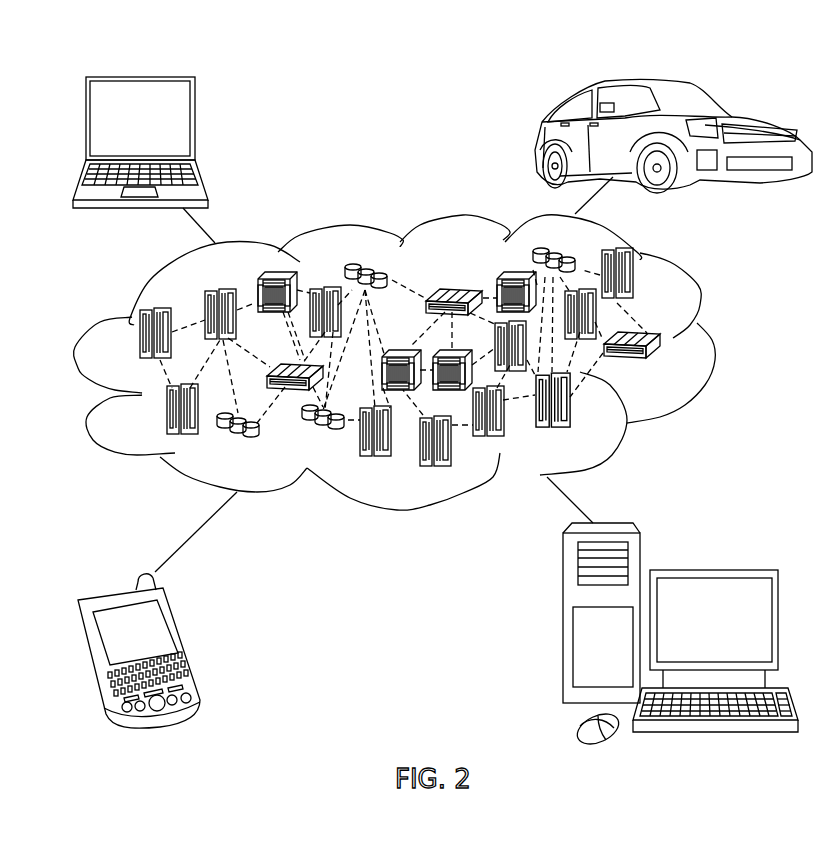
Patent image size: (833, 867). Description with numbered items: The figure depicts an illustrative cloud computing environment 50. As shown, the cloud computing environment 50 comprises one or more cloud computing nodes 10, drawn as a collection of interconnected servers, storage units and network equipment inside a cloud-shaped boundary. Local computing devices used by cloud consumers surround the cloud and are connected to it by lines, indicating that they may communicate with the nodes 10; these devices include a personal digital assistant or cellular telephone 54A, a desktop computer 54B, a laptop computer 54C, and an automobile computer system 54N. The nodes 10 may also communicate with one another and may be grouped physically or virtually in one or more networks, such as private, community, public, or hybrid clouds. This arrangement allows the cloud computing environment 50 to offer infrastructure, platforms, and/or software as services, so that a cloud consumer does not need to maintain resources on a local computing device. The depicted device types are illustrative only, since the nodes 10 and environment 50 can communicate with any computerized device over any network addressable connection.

The cloud computing node 10 is at (413, 362).
The cloud computing environment 50 is at (710, 342).
The personal digital assistant or cellular telephone 54A is at (185, 643).
The desktop computer 54B is at (712, 570).
The laptop computer 54C is at (195, 125).
The automobile computer system 54N is at (542, 138).